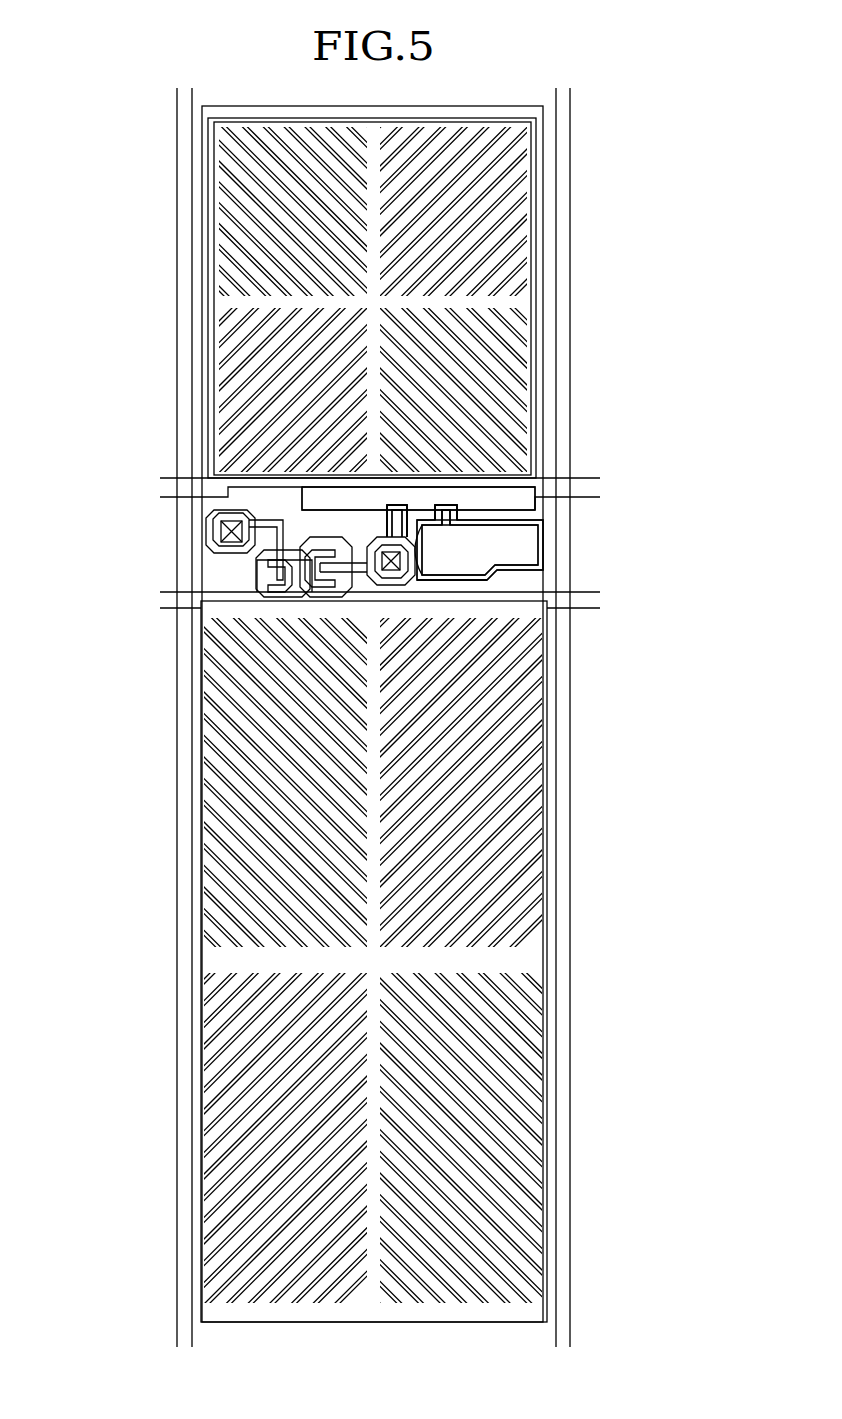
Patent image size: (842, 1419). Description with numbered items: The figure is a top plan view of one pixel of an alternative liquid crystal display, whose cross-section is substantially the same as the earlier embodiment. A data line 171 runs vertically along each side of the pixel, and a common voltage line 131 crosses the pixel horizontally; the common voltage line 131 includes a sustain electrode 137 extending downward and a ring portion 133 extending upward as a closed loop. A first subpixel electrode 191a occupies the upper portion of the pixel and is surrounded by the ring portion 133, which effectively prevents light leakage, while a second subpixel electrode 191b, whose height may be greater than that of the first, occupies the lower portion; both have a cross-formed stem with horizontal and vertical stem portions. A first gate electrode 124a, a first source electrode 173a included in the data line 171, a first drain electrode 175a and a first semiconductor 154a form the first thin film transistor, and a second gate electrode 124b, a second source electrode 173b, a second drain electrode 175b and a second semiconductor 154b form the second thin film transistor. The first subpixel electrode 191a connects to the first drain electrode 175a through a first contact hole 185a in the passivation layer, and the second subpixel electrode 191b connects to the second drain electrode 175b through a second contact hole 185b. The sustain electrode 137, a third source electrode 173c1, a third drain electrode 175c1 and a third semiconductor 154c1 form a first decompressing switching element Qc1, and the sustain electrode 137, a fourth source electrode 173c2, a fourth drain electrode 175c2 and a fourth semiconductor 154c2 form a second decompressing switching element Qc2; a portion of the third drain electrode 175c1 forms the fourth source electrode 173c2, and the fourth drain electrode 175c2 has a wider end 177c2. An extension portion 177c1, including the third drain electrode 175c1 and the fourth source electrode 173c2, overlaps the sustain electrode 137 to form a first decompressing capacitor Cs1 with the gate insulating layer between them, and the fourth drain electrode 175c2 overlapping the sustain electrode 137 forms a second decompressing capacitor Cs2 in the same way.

The data line 171 is at (178, 207).
The ring portion 133 is at (545, 240).
The first subpixel electrode 191a is at (525, 298).
The second subpixel electrode 191b is at (525, 962).
The common voltage line 131 is at (580, 479).
The sustain electrode 137 is at (580, 606).
The first gate electrode 124a is at (262, 575).
The second gate electrode 124b is at (302, 500).
The first contact hole 185a is at (212, 530).
The second contact hole 185b is at (400, 590).
The first semiconductor 154a is at (262, 556).
The second semiconductor 154b is at (345, 580).
The third semiconductor 154c1 is at (425, 590).
The fourth semiconductor 154c2 is at (452, 522).
The first source electrode 173a is at (318, 568).
The second source electrode 173b is at (325, 585).
The third source electrode 173c1 is at (392, 512).
The fourth source electrode 173c2 is at (455, 510).
The first drain electrode 175a is at (268, 578).
The second drain electrode 175b is at (358, 590).
The third drain electrode 175c1 is at (372, 512).
The fourth drain electrode 175c2 is at (430, 560).
The extension portion 177c1 is at (684, 384).
The wider end 177c2 is at (545, 548).
The first decompressing capacitor Cs1 is at (550, 505).
The second decompressing capacitor Cs2 is at (560, 565).
The first decompressing switching element Qc1 is at (387, 494).
The second decompressing switching element Qc2 is at (455, 494).